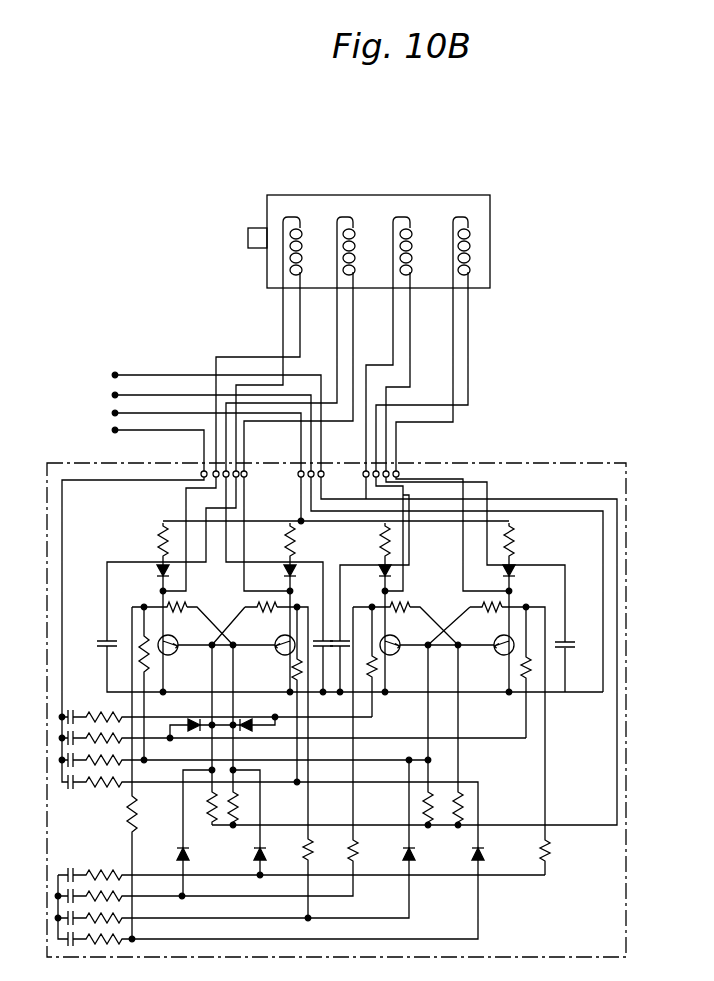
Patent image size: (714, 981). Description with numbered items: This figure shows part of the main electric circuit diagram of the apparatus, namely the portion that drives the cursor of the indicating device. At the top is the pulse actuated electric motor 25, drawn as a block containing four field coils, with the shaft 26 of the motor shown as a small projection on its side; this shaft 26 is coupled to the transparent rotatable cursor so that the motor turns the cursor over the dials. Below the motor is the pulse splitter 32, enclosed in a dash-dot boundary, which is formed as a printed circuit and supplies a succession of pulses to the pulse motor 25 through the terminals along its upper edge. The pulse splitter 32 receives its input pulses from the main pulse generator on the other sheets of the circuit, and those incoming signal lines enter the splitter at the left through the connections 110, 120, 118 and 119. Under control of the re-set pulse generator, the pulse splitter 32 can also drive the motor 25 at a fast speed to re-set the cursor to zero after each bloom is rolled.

The pulse actuated electric motor 25 is at (481, 215).
The shaft of the motor 26 is at (257, 232).
The pulse splitter 32 is at (516, 467).
The input line 110 is at (115, 375).
The input line 120 is at (115, 395).
The input line 118 is at (115, 413).
The input line 119 is at (115, 430).